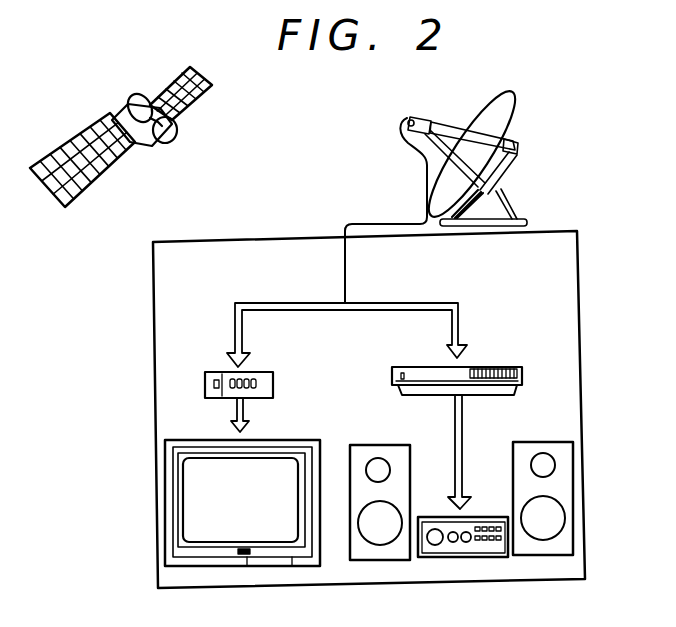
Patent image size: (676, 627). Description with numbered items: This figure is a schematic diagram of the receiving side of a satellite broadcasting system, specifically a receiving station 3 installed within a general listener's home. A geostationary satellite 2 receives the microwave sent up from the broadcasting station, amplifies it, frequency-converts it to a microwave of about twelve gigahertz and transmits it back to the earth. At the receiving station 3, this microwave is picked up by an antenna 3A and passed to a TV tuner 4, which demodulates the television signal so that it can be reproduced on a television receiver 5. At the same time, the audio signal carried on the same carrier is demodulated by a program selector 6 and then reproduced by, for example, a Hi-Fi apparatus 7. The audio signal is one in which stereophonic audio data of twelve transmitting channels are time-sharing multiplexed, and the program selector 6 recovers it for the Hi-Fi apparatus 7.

The geostationary satellite 2 is at (188, 134).
The antenna 3A is at (423, 119).
The receiving station 3 is at (578, 278).
The TV tuner 4 is at (273, 372).
The television receiver 5 is at (292, 438).
The program selector 6 is at (492, 367).
The Hi-Fi apparatus 7 is at (485, 515).